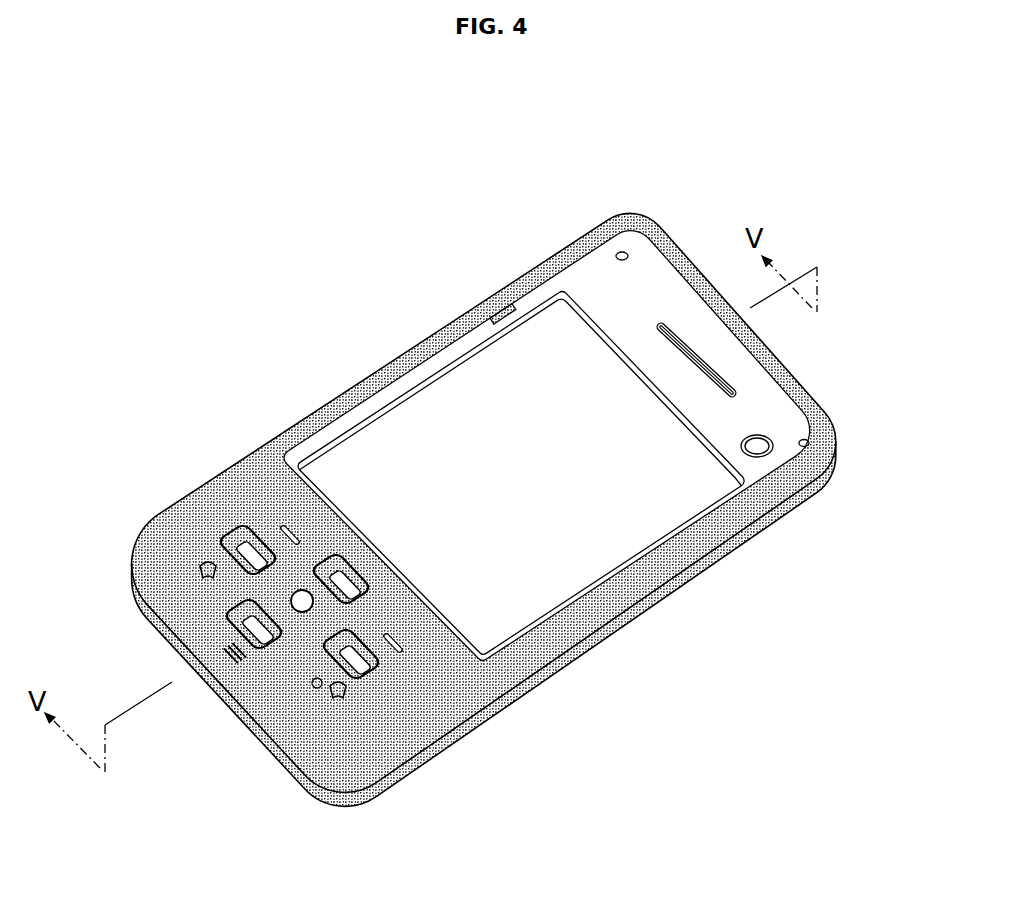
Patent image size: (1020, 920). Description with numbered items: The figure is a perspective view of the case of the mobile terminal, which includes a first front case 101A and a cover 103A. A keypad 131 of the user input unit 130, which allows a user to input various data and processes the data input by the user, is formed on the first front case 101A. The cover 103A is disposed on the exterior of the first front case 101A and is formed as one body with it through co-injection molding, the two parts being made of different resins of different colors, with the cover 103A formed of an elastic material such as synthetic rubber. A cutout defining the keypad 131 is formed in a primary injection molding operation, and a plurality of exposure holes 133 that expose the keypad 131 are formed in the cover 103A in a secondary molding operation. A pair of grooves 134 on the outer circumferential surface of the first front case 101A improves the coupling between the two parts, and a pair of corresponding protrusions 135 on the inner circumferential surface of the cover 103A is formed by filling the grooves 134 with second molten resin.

The first front case 101A is at (770, 462).
The cover 103A is at (604, 625).
The user input unit 130 is at (257, 486).
The keypad 131 is at (372, 678).
The exposure holes 133 is at (226, 530).
The grooves 134 is at (508, 311).
The protrusions 135 is at (500, 308).